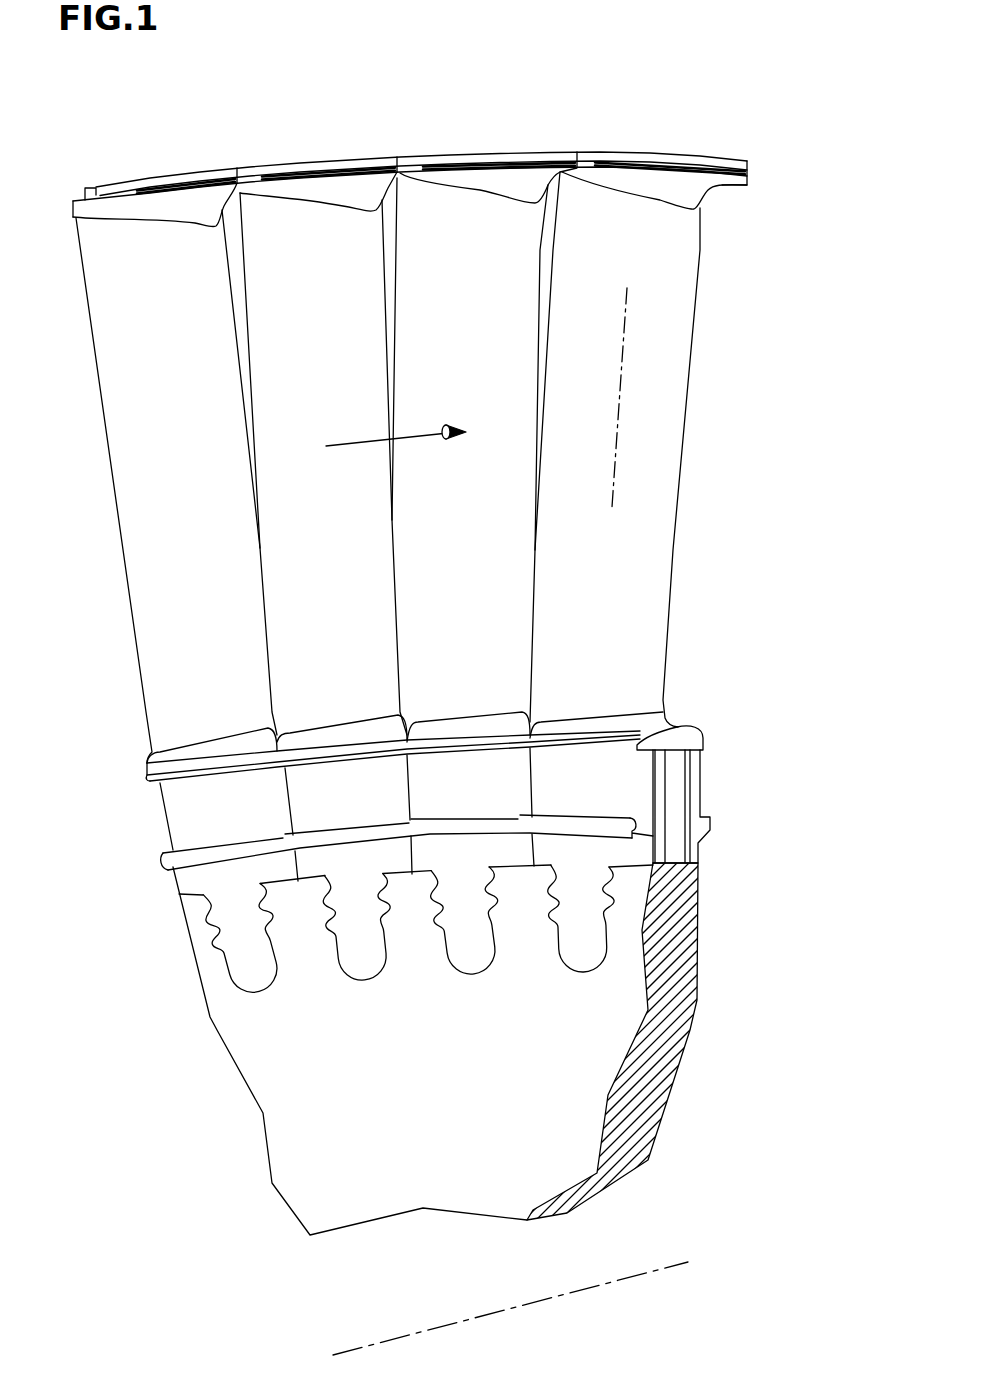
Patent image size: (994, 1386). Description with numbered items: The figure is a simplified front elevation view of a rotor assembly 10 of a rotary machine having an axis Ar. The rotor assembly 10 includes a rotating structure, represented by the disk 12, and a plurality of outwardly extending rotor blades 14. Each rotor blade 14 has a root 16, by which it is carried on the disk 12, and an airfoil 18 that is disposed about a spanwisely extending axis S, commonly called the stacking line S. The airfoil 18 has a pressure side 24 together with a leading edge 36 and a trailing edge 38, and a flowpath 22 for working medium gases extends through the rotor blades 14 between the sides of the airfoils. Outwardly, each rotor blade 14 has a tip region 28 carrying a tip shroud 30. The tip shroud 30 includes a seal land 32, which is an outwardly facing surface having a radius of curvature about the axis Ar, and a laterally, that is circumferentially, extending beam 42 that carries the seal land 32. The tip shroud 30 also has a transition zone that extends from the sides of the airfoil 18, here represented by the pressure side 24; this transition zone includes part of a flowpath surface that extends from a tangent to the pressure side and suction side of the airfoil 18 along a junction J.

The rotor assembly 10 is at (185, 122).
The disk 12 is at (448, 1093).
The rotor blade 14 is at (685, 496).
The root 16 is at (583, 975).
The airfoil 18 is at (628, 563).
The flowpath 22 is at (372, 440).
The pressure side 24 is at (663, 360).
The tip region 28 is at (767, 162).
The tip shroud 30 is at (716, 157).
The seal land 32 is at (543, 153).
The leading edge 36 is at (550, 297).
The trailing edge 38 is at (697, 310).
The beam 42 is at (362, 162).
The junction J is at (677, 205).
The stacking line S is at (618, 402).
The axis Ar is at (447, 1323).